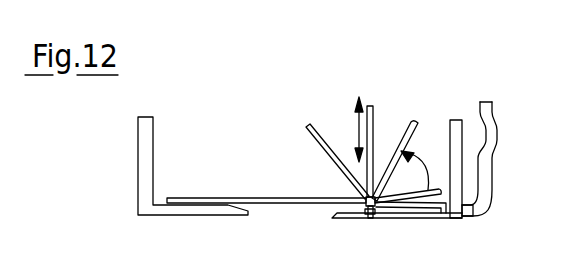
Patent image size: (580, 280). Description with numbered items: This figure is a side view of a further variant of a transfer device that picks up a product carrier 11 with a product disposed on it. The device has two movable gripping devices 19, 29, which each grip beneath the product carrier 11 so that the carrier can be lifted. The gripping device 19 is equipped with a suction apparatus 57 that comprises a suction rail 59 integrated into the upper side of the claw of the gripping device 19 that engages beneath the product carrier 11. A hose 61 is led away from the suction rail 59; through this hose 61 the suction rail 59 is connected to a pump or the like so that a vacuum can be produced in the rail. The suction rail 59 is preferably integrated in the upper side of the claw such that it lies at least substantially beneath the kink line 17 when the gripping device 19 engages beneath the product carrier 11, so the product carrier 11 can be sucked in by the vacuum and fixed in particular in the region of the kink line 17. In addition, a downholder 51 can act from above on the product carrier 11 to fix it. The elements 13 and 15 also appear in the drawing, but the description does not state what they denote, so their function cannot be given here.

The product carrier 11 is at (283, 206).
The plate 13 is at (258, 198).
The lever arm 15 is at (435, 190).
The kink line 17 is at (383, 172).
The gripping device 19 is at (462, 152).
The gripping device 29 is at (138, 146).
The downholder 51 is at (373, 136).
The suction apparatus 57 is at (393, 231).
The suction rail 59 is at (370, 219).
The hose 61 is at (486, 167).